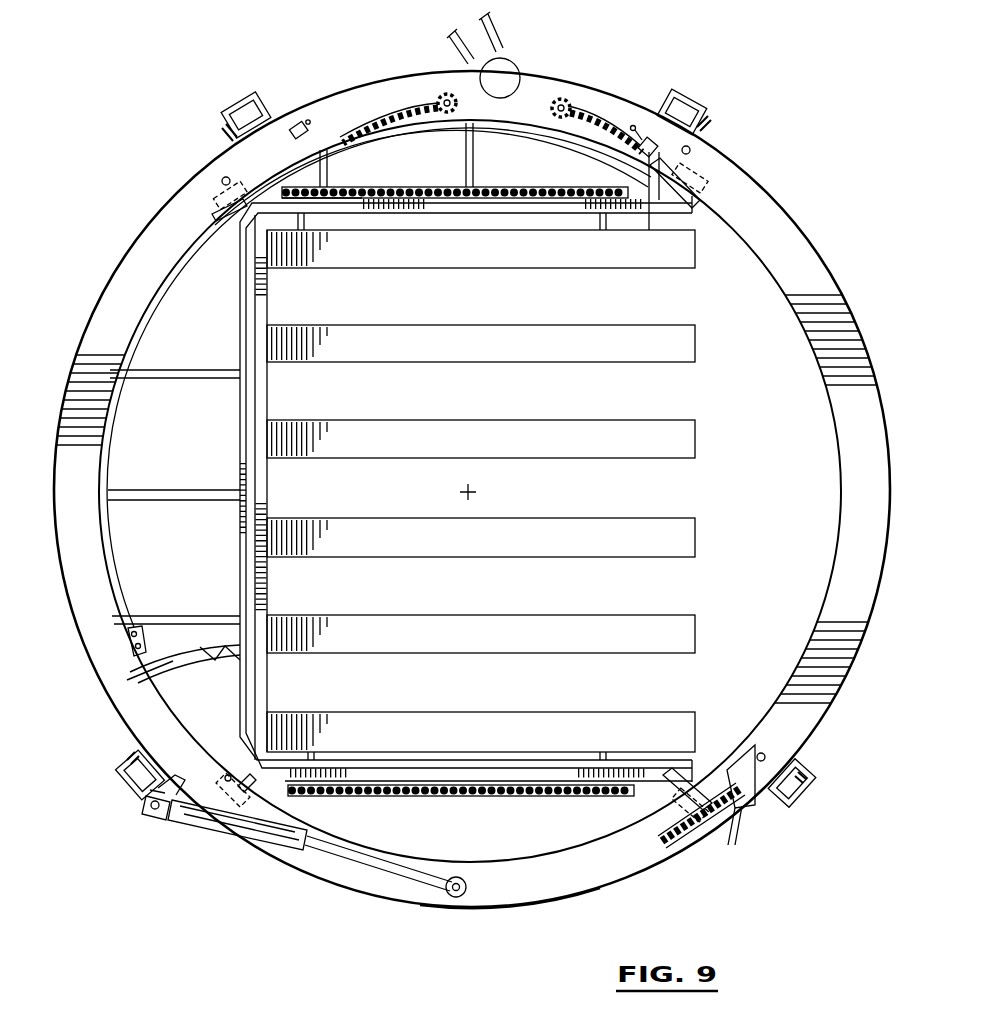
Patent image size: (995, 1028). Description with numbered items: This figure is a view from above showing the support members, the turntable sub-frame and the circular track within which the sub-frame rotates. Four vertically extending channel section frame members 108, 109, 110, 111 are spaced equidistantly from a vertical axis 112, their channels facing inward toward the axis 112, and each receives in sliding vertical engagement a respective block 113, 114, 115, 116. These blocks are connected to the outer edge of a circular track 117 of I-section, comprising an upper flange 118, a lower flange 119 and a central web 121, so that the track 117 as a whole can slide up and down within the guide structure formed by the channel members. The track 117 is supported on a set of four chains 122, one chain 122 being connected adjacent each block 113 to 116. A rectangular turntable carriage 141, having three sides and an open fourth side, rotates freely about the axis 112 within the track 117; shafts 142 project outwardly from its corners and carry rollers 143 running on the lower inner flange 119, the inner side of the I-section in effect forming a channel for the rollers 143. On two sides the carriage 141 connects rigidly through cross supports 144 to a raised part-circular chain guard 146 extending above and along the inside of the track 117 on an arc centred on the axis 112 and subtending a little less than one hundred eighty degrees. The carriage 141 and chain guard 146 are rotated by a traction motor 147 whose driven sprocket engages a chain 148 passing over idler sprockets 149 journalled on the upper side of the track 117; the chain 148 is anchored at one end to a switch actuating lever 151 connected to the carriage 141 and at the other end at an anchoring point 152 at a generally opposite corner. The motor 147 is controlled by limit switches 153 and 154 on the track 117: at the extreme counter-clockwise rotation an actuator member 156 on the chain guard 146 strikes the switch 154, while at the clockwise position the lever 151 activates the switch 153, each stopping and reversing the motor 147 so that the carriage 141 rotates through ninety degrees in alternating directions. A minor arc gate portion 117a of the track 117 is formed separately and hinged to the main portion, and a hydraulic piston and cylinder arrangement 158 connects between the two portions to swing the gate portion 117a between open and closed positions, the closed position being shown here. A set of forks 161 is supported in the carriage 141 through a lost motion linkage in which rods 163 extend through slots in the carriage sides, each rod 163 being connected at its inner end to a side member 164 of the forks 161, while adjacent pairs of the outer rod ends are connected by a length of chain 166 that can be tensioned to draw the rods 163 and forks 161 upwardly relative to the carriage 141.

The channel section frame member 108 is at (250, 97).
The channel section frame member 109 is at (688, 100).
The channel section frame member 110 is at (130, 782).
The channel section frame member 111 is at (807, 789).
The vertical axis 112 is at (478, 492).
The block 113 is at (226, 131).
The block 114 is at (708, 124).
The block 115 is at (134, 752).
The block 116 is at (803, 776).
The circular track 117 is at (860, 328).
The gate portion 117a is at (561, 893).
The upper flange 118 is at (840, 590).
The lower flange 119 is at (726, 828).
The central web 121 is at (706, 842).
The chain 122 is at (222, 180).
The turntable carriage 141 is at (237, 423).
The shaft 142 is at (222, 216).
The roller 143 is at (213, 198).
The cross support 144 is at (327, 164).
The chain guard 146 is at (580, 145).
The traction motor 147 is at (515, 70).
The chain 148 is at (392, 118).
The idler sprocket 149 is at (440, 95).
The switch actuating lever 151 is at (191, 660).
The anchoring point 152 is at (700, 192).
The limit switch 153 is at (300, 122).
The limit switch 154 is at (648, 138).
The actuator member 156 is at (650, 202).
The hydraulic piston and cylinder arrangement 158 is at (275, 846).
The forks 161 is at (658, 434).
The rod 163 is at (305, 230).
The side member 164 is at (418, 252).
The chain 166 is at (413, 188).